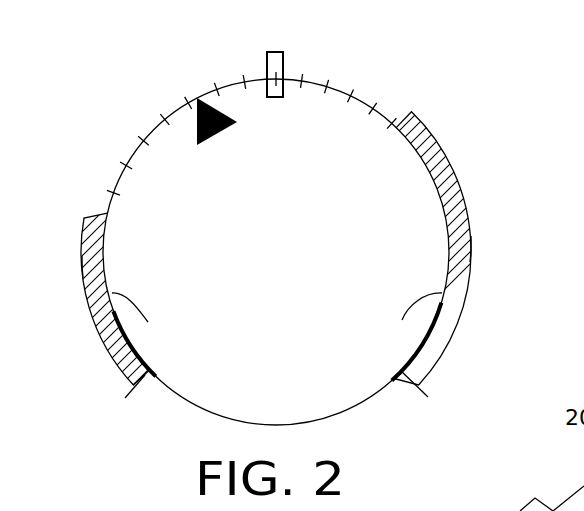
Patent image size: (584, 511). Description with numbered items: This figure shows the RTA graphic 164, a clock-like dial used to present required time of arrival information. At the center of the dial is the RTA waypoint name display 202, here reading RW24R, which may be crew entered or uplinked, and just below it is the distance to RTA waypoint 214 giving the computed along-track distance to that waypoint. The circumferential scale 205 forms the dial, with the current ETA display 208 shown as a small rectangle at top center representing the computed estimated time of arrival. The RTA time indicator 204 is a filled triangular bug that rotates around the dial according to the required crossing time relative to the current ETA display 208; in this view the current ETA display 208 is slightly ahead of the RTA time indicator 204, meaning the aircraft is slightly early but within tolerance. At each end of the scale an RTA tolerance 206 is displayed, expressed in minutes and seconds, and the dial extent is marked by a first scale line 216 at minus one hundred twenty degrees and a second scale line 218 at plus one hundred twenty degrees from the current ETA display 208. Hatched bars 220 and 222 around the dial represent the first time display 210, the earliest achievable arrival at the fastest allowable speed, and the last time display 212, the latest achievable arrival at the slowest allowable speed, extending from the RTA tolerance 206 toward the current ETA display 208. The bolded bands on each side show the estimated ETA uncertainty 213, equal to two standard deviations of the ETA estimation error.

The RTA graphic 164 is at (358, 90).
The RTA waypoint name display 202 is at (373, 173).
The RTA time indicator 204 is at (195, 119).
The circumferential scale 205 is at (138, 128).
The RTA tolerance 206 is at (152, 380).
The current ETA display 208 is at (278, 52).
The first time display 210 is at (413, 115).
The last time display 212 is at (84, 214).
The estimated ETA uncertainty 213 is at (148, 322).
The distance to RTA waypoint 214 is at (317, 240).
The first scale line 216 is at (162, 381).
The second scale line 218 is at (394, 378).
The bar 220 is at (473, 247).
The bar 222 is at (82, 267).